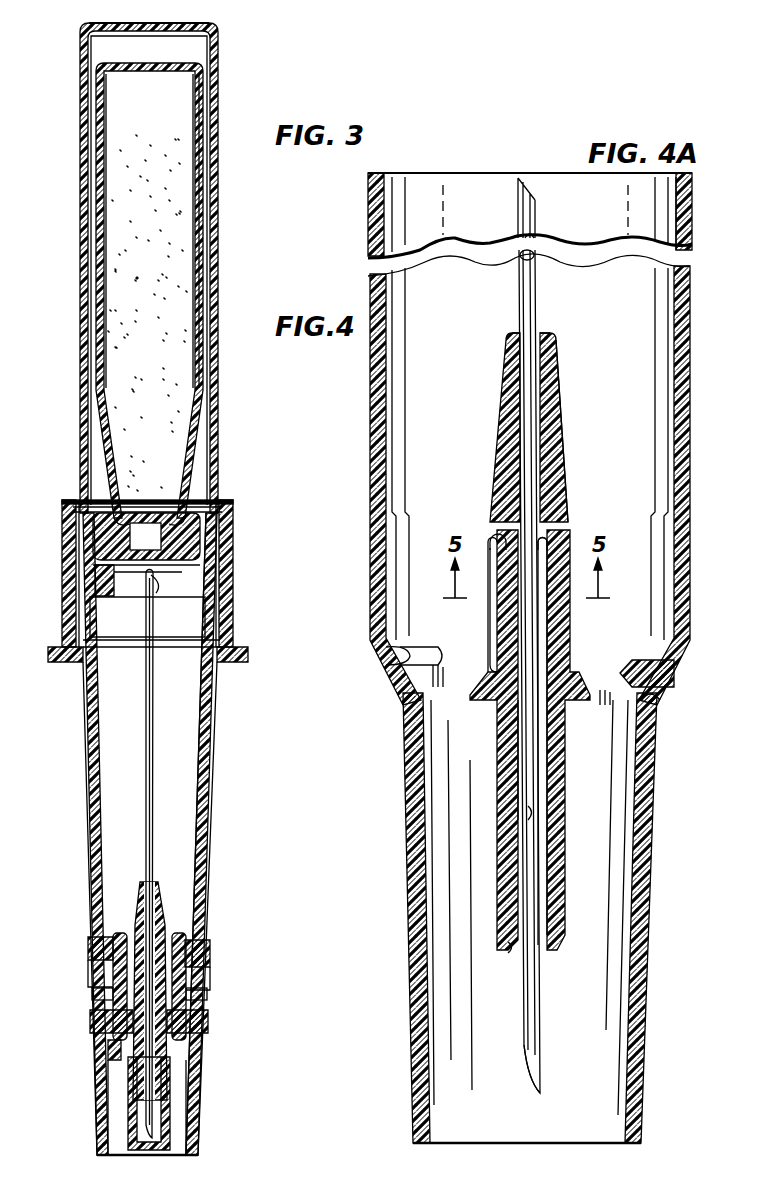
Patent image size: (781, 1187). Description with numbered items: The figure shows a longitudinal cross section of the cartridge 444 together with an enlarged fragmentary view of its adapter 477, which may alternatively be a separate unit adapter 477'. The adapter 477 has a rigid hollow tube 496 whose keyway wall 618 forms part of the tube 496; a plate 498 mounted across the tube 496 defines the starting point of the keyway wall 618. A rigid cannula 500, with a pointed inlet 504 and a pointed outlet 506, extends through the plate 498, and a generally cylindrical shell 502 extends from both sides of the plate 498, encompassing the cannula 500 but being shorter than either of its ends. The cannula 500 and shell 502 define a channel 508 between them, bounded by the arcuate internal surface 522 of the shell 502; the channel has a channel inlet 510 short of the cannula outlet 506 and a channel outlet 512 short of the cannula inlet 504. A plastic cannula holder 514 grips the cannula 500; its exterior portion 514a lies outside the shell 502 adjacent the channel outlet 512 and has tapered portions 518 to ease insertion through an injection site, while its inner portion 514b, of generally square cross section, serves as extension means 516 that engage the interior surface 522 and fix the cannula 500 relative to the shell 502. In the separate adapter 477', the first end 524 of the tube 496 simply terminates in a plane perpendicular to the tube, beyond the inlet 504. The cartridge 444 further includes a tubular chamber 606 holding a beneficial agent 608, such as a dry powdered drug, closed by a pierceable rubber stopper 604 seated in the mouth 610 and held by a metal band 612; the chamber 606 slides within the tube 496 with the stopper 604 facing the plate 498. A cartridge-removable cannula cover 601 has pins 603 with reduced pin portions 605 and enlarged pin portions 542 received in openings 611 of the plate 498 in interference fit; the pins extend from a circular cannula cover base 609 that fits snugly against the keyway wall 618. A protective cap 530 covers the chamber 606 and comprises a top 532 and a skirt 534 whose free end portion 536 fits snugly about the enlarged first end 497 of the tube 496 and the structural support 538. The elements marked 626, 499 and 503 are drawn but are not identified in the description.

In FIG. 3, the top 532 is at (160, 22).
In FIG. 3, the inner surface of cap 626 is at (125, 66).
In FIG. 3, the skirt 534 is at (219, 95).
In FIG. 3, the protective cap 530 is at (218, 192).
In FIG. 3, the tubular chamber 606 is at (205, 300).
In FIG. 3, the beneficial agent 608 is at (130, 320).
In FIG. 3, the mouth 610 is at (226, 508).
In FIG. 3, the metal band 612 is at (96, 528).
In FIG. 3, the free end portion 536 is at (233, 541).
In FIG. 3, the structural support 538 is at (212, 560).
In FIG. 3, the pierceable stopper 604 is at (100, 576).
In FIG. 3, the inlet 504 is at (154, 586).
In FIG. 4A, the inlet 504 is at (520, 178).
In FIG. 3, the first end 497 is at (220, 618).
In FIG. 3, the cartridge 444 is at (67, 686).
In FIG. 3, the hollow tube 496 is at (220, 686).
In FIG. 4, the hollow tube 496 is at (676, 290).
In FIG. 3, the adapter 477 is at (119, 834).
In FIG. 4, the adapter 477 is at (562, 485).
In FIG. 3, the cannula 500 is at (156, 786).
In FIG. 4, the cannula 500 is at (542, 762).
In FIG. 3, the pins 603 is at (114, 937).
In FIG. 3, the reduced pin portion 605 is at (118, 972).
In FIG. 3, the plate 498 is at (104, 996).
In FIG. 4, the plate 498 is at (666, 657).
In FIG. 3, the flange 499 is at (196, 996).
In FIG. 3, the openings 611 is at (100, 1006).
In FIG. 4, the openings 611 is at (396, 654).
In FIG. 3, the enlarged pin portion 542 is at (108, 1022).
In FIG. 3, the cannula cover base 609 is at (110, 1048).
In FIG. 3, the keyway wall 618 is at (200, 1062).
In FIG. 4, the keyway wall 618 is at (630, 856).
In FIG. 3, the cannula cover 601 is at (172, 1106).
In FIG. 4A, the first end 524 is at (372, 173).
In FIG. 4A, the separate unit adapter 477' is at (717, 211).
In FIG. 4, the tapered portion 518 is at (546, 336).
In FIG. 4, the cannula holder 514 is at (553, 420).
In FIG. 4, the exterior portion 514a is at (563, 450).
In FIG. 4, the inner holder portion 514b is at (497, 535).
In FIG. 4, the channel outlet 512 is at (556, 534).
In FIG. 4, the internal surface 522 is at (548, 614).
In FIG. 4, the extension means 516 is at (494, 630).
In FIG. 4, the shell 502 is at (570, 632).
In FIG. 4, the channel 508 is at (508, 760).
In FIG. 4, the needle opening 503 is at (538, 816).
In FIG. 4, the channel inlet 510 is at (512, 950).
In FIG. 4, the outlet 506 is at (543, 1070).